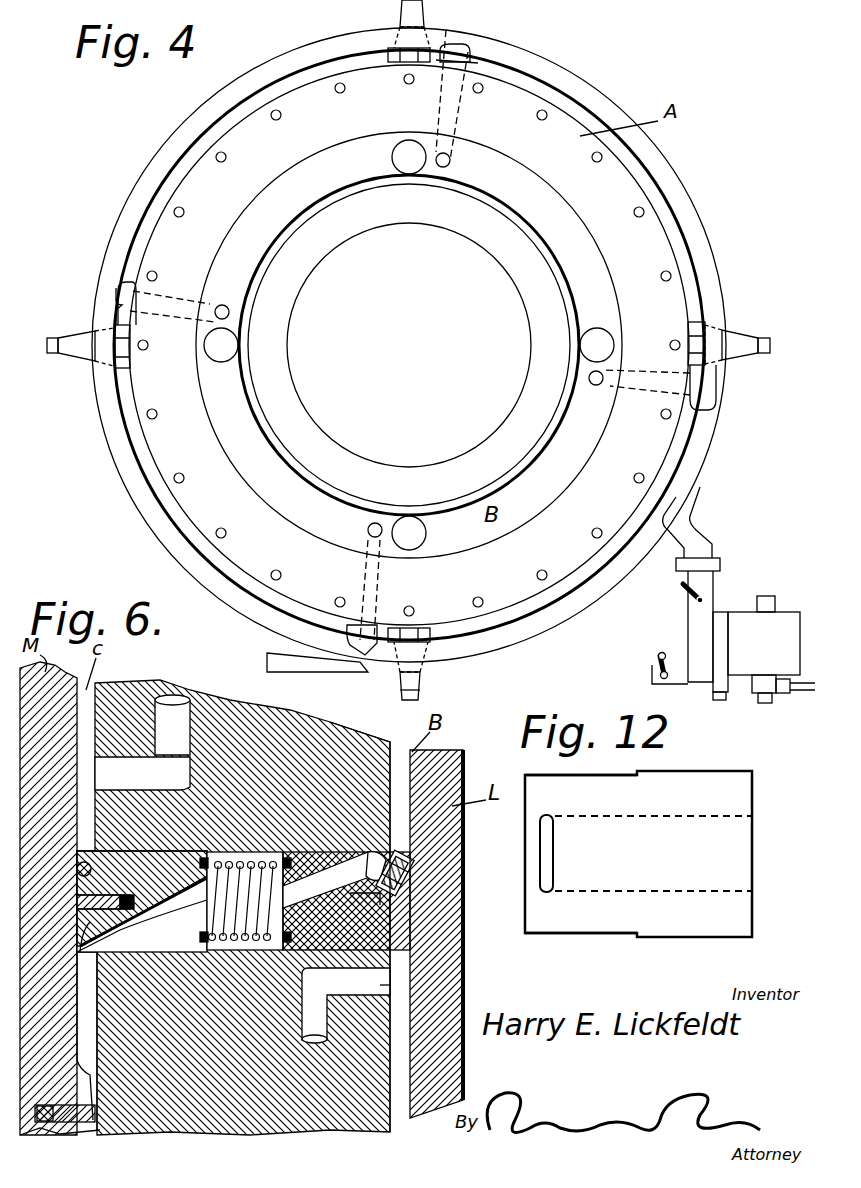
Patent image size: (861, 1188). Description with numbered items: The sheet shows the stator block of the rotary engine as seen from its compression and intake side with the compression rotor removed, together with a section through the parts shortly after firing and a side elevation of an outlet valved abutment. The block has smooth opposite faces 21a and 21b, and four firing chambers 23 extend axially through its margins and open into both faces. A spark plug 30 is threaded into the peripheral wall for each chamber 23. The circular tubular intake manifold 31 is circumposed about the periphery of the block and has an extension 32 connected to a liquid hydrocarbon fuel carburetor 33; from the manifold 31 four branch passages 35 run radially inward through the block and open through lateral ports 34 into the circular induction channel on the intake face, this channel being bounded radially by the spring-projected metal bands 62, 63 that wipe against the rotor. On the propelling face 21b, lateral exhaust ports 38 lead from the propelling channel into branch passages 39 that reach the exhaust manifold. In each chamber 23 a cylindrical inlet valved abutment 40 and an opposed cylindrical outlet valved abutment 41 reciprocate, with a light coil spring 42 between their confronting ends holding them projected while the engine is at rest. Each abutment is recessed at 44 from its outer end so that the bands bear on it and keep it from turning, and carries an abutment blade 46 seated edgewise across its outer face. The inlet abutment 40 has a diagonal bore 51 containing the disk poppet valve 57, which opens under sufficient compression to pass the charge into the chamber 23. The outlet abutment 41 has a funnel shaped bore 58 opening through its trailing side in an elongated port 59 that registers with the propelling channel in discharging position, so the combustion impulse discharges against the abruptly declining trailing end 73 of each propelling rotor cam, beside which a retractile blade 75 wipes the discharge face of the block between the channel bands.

In FIG. 4, the smooth face of stator block 21a is at (592, 187).
In FIG. 6, the smooth face of stator block 21a is at (402, 748).
In FIG. 6, the propelling face of stator block 21b is at (108, 682).
In FIG. 4, the firing chamber 23 is at (405, 148).
In FIG. 4, the spark plug 30 is at (400, 9).
In FIG. 4, the intake manifold 31 is at (716, 270).
In FIG. 4, the extension 32 is at (712, 535).
In FIG. 4, the carburetor 33 is at (762, 632).
In FIG. 4, the lateral intake port 34 is at (450, 164).
In FIG. 6, the lateral intake port 34 is at (392, 985).
In FIG. 4, the branch passage 35 is at (456, 130).
In FIG. 6, the branch passage 35 is at (346, 1005).
In FIG. 6, the lateral exhaust port 38 is at (98, 788).
In FIG. 6, the exhaust branch passage 39 is at (172, 725).
In FIG. 6, the inlet valved abutment 40 is at (440, 952).
In FIG. 12, the outlet valved abutment 41 is at (672, 781).
In FIG. 6, the coil spring 42 is at (220, 899).
In FIG. 12, the recessed portion 44 is at (556, 762).
In FIG. 6, the abutment blade 46 is at (125, 850).
In FIG. 6, the diagonal bore 51 is at (346, 901).
In FIG. 6, the disk poppet valve 57 is at (410, 880).
In FIG. 6, the funnel shaped bore 58 is at (142, 901).
In FIG. 6, the elongated port 59 is at (86, 1041).
In FIG. 12, the elongated port 59 is at (546, 868).
In FIG. 4, the inner band 62 is at (556, 268).
In FIG. 4, the outer band 63 is at (602, 274).
In FIG. 6, the trailing end of cam 73 is at (75, 1120).
In FIG. 6, the retractile blade 75 is at (95, 1135).